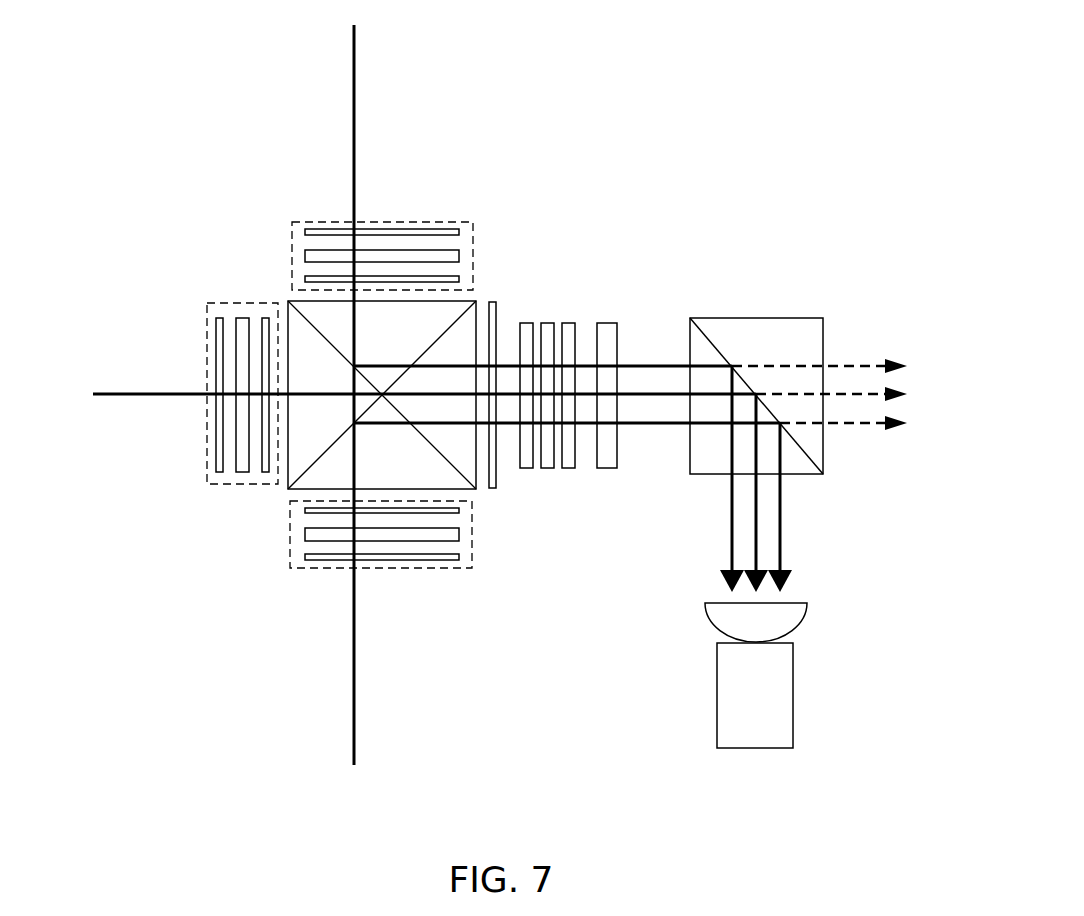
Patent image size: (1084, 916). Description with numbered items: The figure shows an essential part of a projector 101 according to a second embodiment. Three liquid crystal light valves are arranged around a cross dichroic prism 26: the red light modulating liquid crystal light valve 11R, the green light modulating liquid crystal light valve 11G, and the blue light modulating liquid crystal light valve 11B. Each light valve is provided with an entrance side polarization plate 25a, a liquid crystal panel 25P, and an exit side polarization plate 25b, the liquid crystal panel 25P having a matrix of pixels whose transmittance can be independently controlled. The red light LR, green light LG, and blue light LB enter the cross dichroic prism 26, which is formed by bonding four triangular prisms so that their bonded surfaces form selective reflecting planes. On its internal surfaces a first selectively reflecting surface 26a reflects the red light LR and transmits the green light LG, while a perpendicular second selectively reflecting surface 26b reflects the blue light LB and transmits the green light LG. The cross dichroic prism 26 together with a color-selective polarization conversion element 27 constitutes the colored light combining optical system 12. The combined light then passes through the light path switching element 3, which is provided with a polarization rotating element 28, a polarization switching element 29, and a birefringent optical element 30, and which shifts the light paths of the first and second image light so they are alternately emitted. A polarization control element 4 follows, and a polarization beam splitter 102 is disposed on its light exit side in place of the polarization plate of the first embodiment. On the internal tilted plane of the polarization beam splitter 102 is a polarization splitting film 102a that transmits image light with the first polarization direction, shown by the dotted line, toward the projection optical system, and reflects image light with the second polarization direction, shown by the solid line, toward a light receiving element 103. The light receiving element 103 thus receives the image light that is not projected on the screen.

The projector 101 is at (652, 83).
The blue light modulating liquid crystal light valve 11B is at (410, 222).
The green light modulating liquid crystal light valve 11G is at (207, 430).
The red light modulating liquid crystal light valve 11R is at (386, 569).
The entrance side polarization plate 25a is at (305, 232).
The liquid crystal panel 25P is at (305, 256).
The exit side polarization plate 25b is at (305, 279).
The cross dichroic prism 26 is at (380, 440).
The first selectively reflecting surface 26a is at (312, 490).
The second selectively reflecting surface 26b is at (318, 322).
The color-selective polarization conversion element 27 is at (497, 470).
The colored light combining optical system 12 is at (581, 470).
The light path switching element 3 is at (550, 344).
The polarization rotating element 28 is at (527, 323).
The polarization switching element 29 is at (548, 323).
The birefringent optical element 30 is at (579, 367).
The polarization control element 4 is at (607, 323).
The polarization beam splitter 102 is at (779, 388).
The polarization splitting film 102a is at (812, 462).
The light receiving element 103 is at (793, 660).
The blue light LB is at (357, 72).
The green light LG is at (122, 397).
The red light LR is at (356, 720).